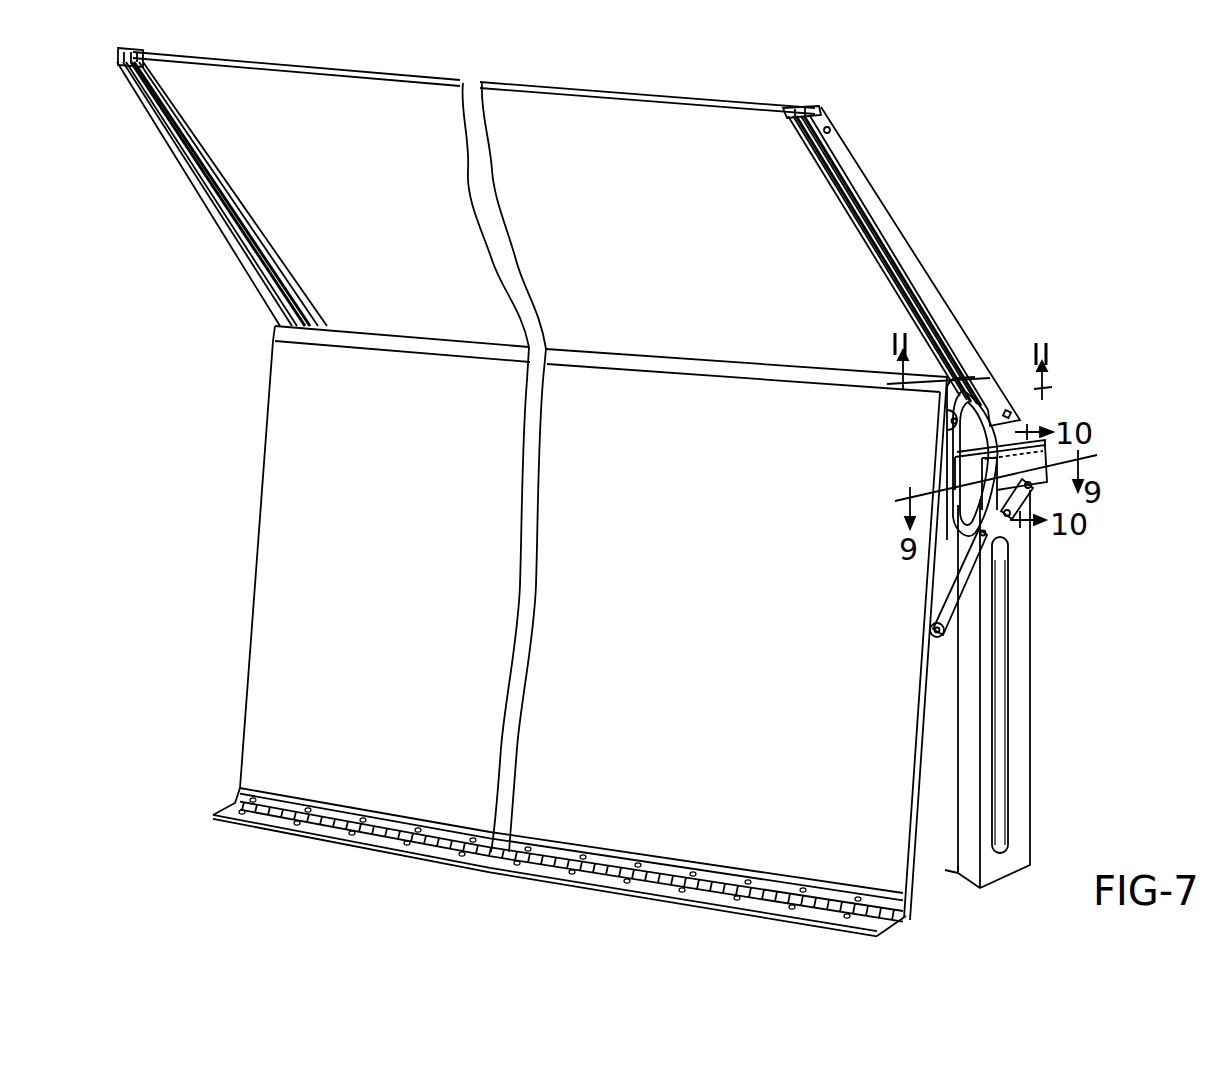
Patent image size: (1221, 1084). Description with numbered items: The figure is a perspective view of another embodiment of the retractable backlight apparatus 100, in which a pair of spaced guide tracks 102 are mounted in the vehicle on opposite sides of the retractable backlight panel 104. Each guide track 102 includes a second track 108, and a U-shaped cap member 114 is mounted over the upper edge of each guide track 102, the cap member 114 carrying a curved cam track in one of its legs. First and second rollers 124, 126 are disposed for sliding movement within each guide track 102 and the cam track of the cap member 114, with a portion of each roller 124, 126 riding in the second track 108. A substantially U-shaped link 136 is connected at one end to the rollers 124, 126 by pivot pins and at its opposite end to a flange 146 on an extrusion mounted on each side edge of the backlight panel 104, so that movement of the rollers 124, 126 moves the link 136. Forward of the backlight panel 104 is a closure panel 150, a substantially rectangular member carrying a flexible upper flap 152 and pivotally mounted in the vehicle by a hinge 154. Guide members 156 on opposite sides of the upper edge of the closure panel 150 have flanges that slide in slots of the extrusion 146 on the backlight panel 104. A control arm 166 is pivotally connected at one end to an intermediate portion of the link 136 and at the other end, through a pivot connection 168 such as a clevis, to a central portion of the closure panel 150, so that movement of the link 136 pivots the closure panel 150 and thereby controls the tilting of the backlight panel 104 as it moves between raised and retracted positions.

The retractable backlight apparatus 100 is at (236, 428).
The guide track 102 is at (1090, 787).
The retractable backlight panel 104 is at (529, 108).
The second track 108 is at (1000, 742).
The cap member 114 is at (997, 480).
The first roller 124 is at (1015, 527).
The second roller 126 is at (1035, 482).
The link 136 is at (957, 440).
The flange 146 is at (823, 122).
The closure panel 150 is at (288, 523).
The upper flap 152 is at (280, 328).
The hinge 154 is at (362, 840).
The guide member 156 is at (952, 405).
The control arm 166 is at (967, 592).
The pivot connection 168 is at (935, 623).